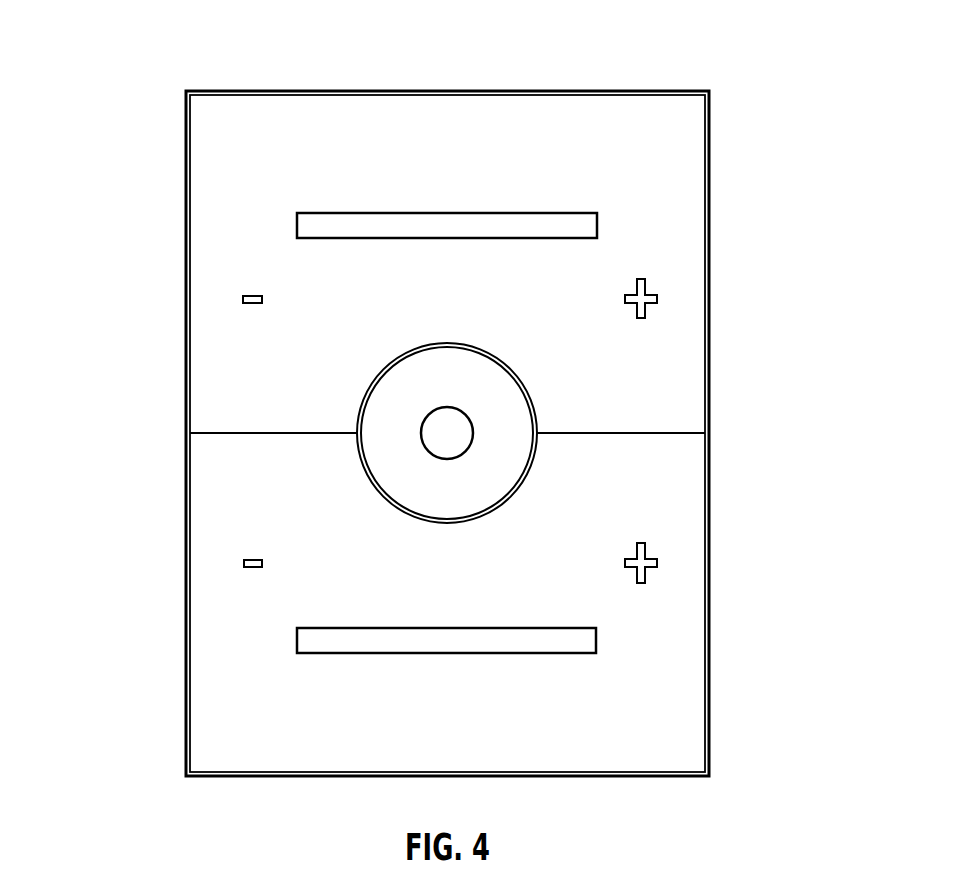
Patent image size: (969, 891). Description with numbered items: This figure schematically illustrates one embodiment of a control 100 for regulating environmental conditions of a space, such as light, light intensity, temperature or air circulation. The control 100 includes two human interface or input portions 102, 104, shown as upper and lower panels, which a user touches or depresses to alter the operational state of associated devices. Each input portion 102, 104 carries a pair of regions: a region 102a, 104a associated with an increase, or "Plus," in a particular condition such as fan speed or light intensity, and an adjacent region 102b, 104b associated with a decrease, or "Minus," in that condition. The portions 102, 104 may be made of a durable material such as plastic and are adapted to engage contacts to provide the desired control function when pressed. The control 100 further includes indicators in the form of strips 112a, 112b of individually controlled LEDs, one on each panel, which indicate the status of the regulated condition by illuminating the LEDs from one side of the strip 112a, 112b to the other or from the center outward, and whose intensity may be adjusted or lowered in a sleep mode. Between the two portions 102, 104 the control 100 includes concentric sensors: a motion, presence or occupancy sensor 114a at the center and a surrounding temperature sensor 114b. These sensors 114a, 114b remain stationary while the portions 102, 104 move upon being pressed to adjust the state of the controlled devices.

The control 100 is at (694, 38).
The human interface or input portion 102 is at (715, 120).
The human interface or input portion 104 is at (136, 600).
The region 102a is at (238, 300).
The region 102b is at (662, 299).
The region 104a is at (238, 563).
The region 104b is at (662, 563).
The strip 112a is at (512, 213).
The strip 112b is at (512, 628).
The motion, presence or occupancy sensor 114a is at (423, 437).
The temperature sensor 114b is at (505, 386).